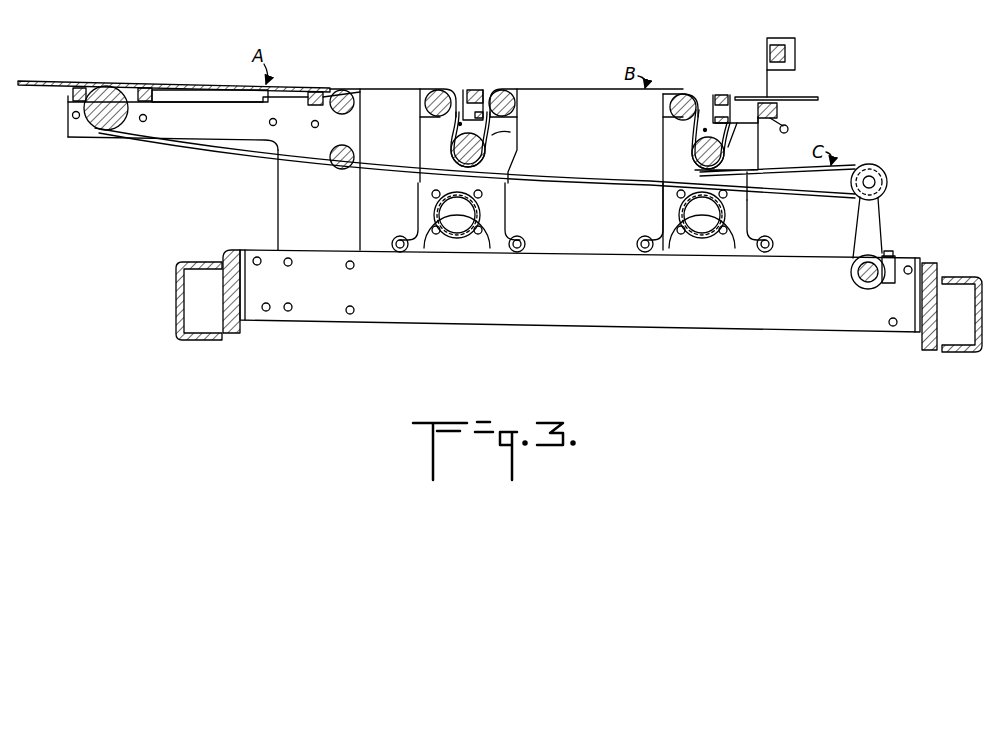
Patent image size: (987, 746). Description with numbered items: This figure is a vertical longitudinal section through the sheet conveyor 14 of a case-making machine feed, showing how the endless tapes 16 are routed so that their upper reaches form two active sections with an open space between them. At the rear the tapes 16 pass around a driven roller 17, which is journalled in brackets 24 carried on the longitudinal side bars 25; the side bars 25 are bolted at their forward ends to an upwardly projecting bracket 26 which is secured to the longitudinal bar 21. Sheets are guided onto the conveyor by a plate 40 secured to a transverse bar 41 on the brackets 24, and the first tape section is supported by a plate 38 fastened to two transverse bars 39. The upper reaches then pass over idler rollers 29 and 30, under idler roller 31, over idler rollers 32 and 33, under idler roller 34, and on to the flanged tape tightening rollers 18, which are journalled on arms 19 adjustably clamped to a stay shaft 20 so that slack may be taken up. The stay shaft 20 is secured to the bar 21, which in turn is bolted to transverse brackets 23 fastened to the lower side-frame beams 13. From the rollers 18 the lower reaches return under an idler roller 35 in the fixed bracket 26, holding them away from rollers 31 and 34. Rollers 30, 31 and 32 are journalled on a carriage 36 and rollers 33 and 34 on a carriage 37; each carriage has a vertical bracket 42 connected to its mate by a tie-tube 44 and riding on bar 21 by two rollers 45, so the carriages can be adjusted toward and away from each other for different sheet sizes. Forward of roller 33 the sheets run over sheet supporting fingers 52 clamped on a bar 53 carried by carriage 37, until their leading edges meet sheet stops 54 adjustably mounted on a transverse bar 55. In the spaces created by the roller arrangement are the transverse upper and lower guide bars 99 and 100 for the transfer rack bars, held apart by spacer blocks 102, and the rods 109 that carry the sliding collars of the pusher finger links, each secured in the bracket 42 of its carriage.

The lower side-frame beam 13 is at (175, 299).
The conveyor 14 is at (402, 89).
The endless tape 16 is at (598, 89).
The driven roller 17 is at (106, 120).
The flanged roller 18 is at (888, 180).
The arm 19 is at (879, 216).
The stay shaft 20 is at (851, 275).
The longitudinally extending bar 21 is at (613, 316).
The bracket 23 is at (240, 320).
The bracket 24 is at (66, 97).
The side bar 25 is at (188, 134).
The bracket 26 is at (276, 206).
The idler roller 29 is at (344, 110).
The idler roller 30 is at (424, 105).
The idler roller 31 is at (458, 156).
The idler roller 32 is at (510, 105).
The idler roller 33 is at (672, 107).
The idler roller 34 is at (700, 158).
The idler roller 35 is at (330, 152).
The carriage 36 is at (520, 172).
The carriage 37 is at (640, 172).
The plate 38 is at (200, 100).
The transverse bar 39 is at (147, 88).
The plate 40 is at (72, 82).
The transverse bar 41 is at (82, 88).
The bracket 42 is at (417, 196).
The tie-tube 44 is at (455, 238).
The roller 45 is at (394, 240).
The sheet supporting finger 52 is at (792, 97).
The bar 53 is at (768, 120).
The sheet stop 54 is at (766, 82).
The bar 55 is at (776, 45).
The upper guide bar 99 is at (483, 92).
The lower guide bar 100 is at (492, 135).
The spacer block 102 is at (468, 95).
The rod 109 is at (459, 125).